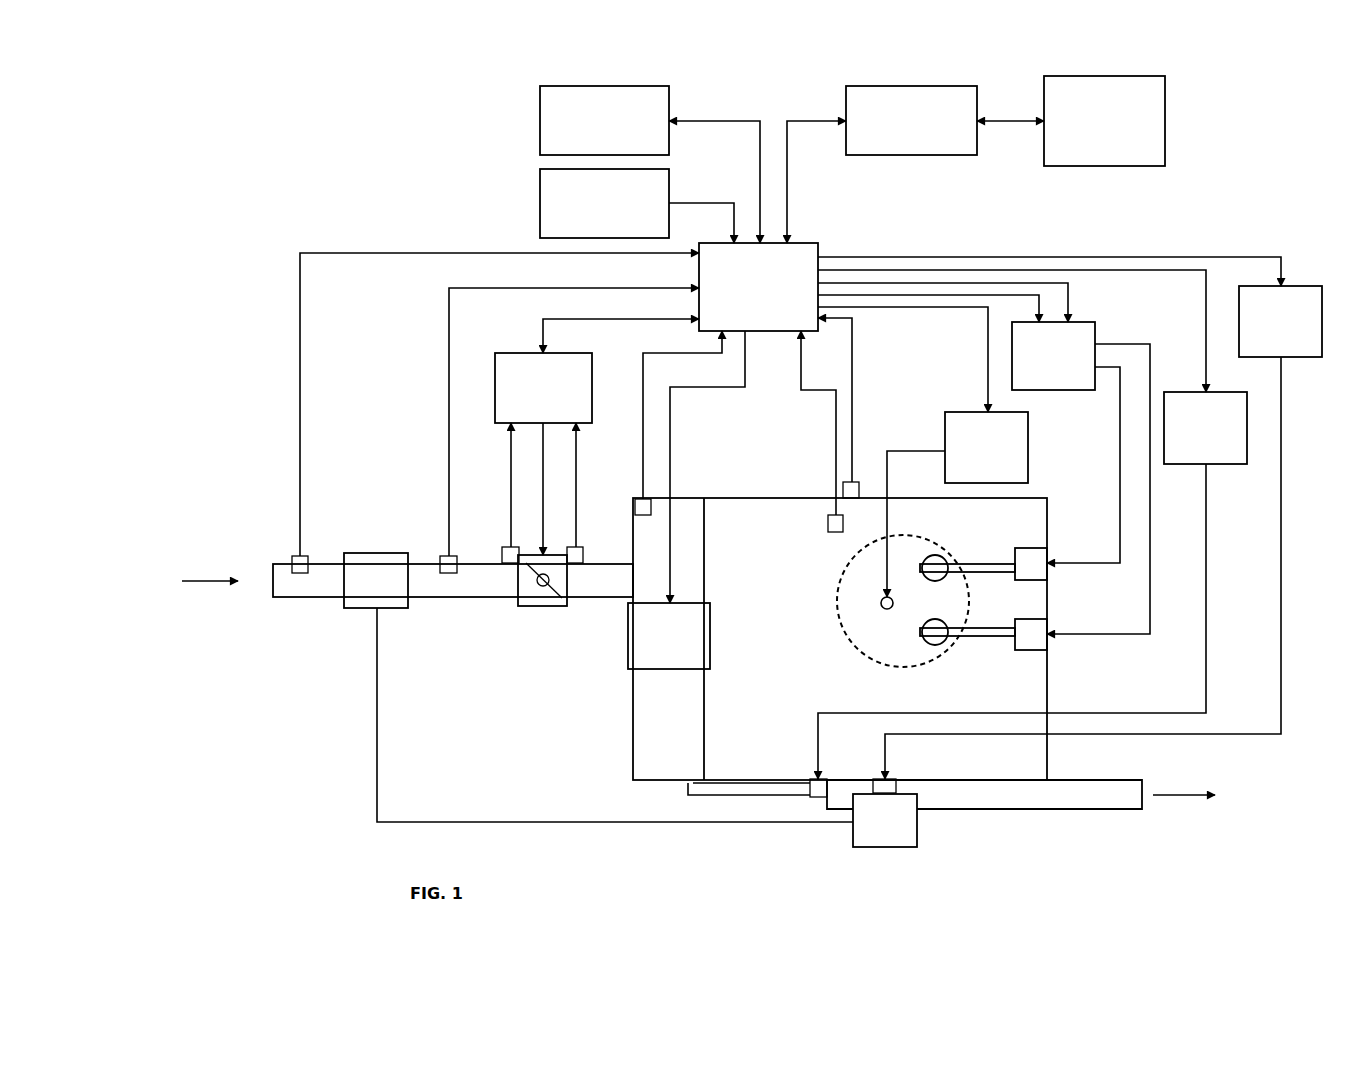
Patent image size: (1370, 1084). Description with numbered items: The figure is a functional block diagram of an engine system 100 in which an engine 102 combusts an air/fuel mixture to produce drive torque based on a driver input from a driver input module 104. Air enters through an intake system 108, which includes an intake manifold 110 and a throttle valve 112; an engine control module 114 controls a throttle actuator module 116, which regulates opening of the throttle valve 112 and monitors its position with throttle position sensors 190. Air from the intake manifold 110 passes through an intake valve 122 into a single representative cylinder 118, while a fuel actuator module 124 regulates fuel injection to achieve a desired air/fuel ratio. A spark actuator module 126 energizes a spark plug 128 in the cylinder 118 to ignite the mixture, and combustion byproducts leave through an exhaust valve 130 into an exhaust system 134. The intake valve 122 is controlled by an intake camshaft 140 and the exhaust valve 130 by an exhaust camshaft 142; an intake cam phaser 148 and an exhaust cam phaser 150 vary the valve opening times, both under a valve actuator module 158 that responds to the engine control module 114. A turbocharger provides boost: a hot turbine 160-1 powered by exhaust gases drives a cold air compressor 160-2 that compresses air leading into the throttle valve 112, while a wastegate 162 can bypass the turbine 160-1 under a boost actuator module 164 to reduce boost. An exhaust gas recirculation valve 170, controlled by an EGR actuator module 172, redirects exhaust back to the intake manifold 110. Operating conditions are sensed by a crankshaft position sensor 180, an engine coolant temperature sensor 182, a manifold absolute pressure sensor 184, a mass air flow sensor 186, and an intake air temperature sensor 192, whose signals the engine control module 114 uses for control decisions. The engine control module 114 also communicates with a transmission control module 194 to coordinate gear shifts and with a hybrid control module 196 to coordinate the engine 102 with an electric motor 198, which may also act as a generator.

The engine system 100 is at (252, 148).
The engine 102 is at (1048, 506).
The driver input module 104 is at (540, 203).
The intake system 108 is at (506, 716).
The intake manifold 110 is at (632, 716).
The throttle valve 112 is at (546, 606).
The engine control module 114 is at (818, 245).
The throttle actuator module 116 is at (519, 353).
The cylinder 118 is at (866, 655).
The intake valve 122 is at (937, 556).
The fuel actuator module 124 is at (696, 669).
The spark actuator module 126 is at (1030, 446).
The spark plug 128 is at (881, 604).
The exhaust valve 130 is at (937, 645).
The exhaust system 134 is at (1086, 850).
The intake camshaft 140 is at (992, 564).
The exhaust camshaft 142 is at (992, 636).
The intake cam phaser 148 is at (1030, 548).
The exhaust cam phaser 150 is at (1034, 650).
The valve actuator module 158 is at (1095, 328).
The hot turbine 160-1 is at (917, 828).
The cold air compressor 160-2 is at (360, 608).
The wastegate 162 is at (896, 780).
The boost actuator module 164 is at (1302, 357).
The exhaust gas recirculation valve 170 is at (816, 797).
The EGR actuator module 172 is at (1228, 464).
The crankshaft position sensor 180 is at (856, 482).
The engine coolant temperature sensor 182 is at (836, 532).
The manifold absolute pressure sensor 184 is at (640, 499).
The mass air flow sensor 186 is at (440, 556).
The throttle position sensors 190 is at (508, 563).
The intake air temperature sensor 192 is at (294, 556).
The transmission control module 194 is at (540, 120).
The hybrid control module 196 is at (912, 155).
The electric motor 198 is at (1115, 166).